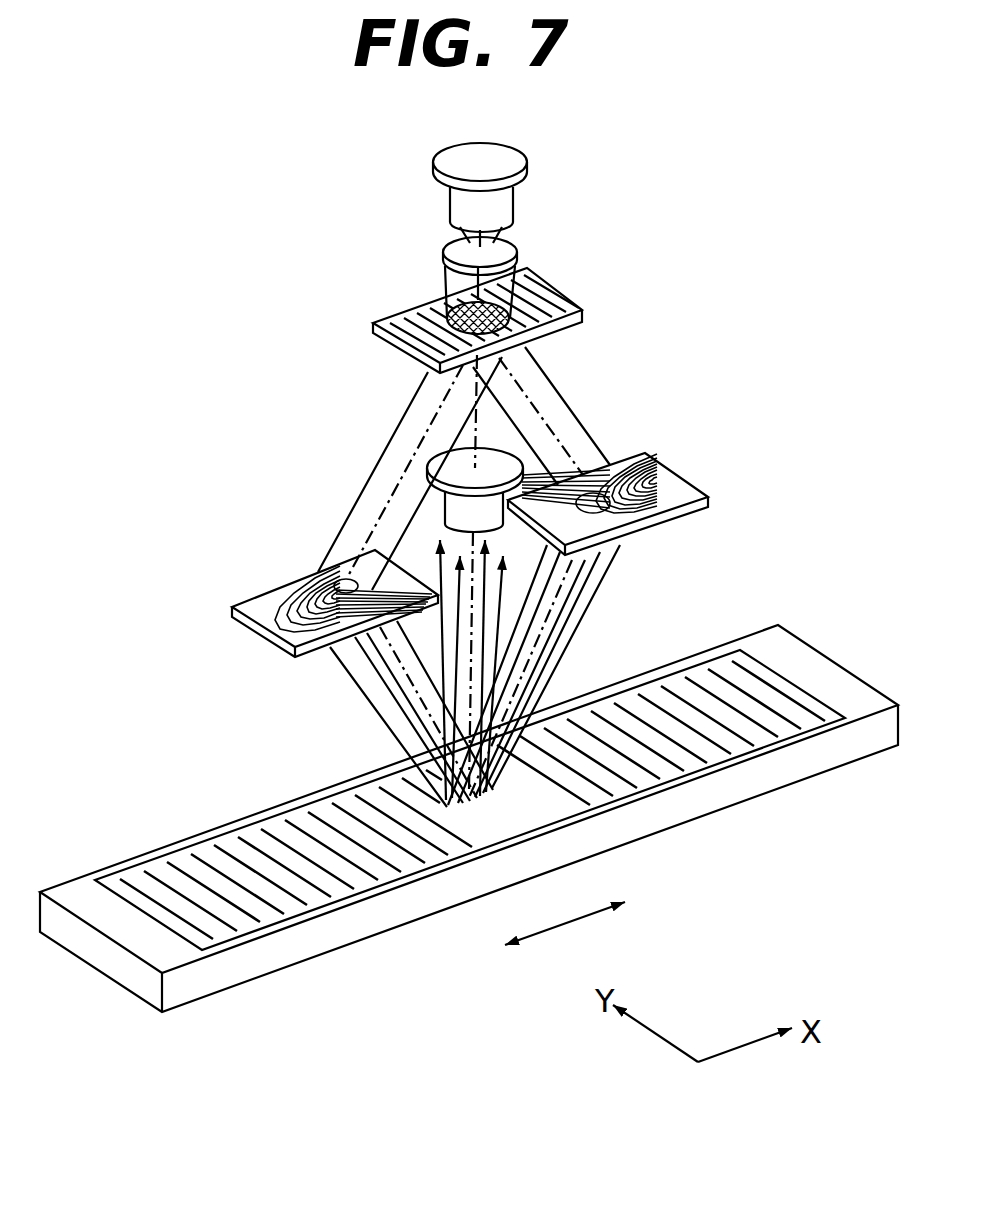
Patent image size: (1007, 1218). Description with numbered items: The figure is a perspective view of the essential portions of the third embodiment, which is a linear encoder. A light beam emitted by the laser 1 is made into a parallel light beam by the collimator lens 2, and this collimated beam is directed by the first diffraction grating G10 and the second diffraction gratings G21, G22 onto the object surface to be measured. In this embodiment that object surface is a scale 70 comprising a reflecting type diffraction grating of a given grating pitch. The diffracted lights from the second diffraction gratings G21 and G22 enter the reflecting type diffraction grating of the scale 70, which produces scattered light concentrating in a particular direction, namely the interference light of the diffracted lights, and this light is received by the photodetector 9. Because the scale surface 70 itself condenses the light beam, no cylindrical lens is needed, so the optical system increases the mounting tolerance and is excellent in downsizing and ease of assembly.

The laser 1 is at (522, 163).
The collimator lens 2 is at (512, 249).
The first diffraction grating G10 is at (538, 287).
The photodetector 9 is at (438, 455).
The second diffraction grating G21 is at (257, 597).
The second diffraction grating G22 is at (647, 455).
The scale 70 is at (742, 785).